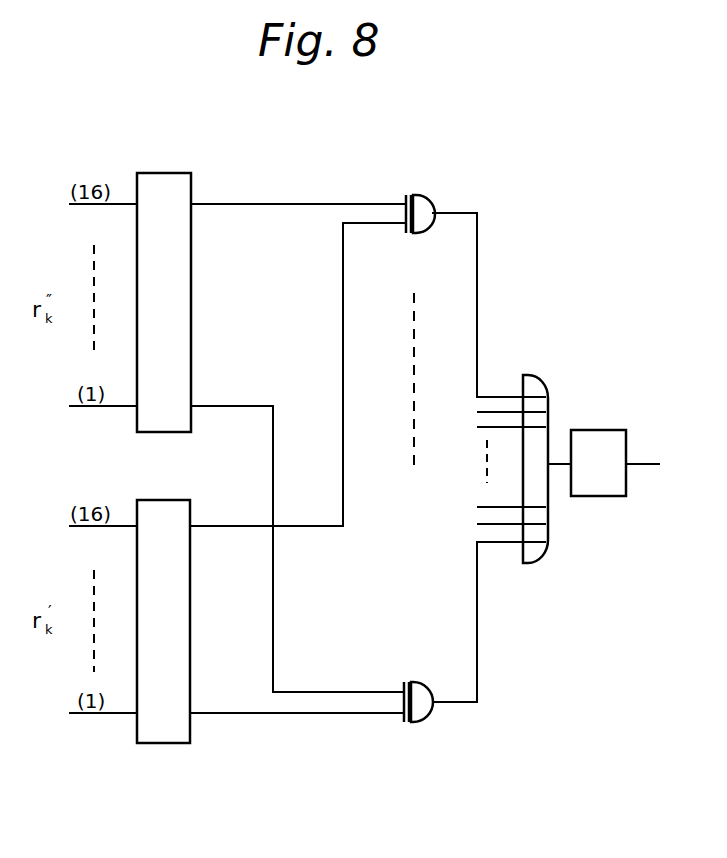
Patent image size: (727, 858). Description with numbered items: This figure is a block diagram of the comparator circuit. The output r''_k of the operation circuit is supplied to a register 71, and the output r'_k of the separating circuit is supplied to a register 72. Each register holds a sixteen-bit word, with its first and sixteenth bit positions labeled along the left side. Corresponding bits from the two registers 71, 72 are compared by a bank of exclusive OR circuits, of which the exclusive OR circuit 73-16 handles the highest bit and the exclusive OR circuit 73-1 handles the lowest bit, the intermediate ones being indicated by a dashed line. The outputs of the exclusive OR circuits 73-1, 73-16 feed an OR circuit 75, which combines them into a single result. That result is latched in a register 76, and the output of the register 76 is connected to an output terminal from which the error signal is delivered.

The register 71 is at (170, 172).
The register 72 is at (170, 499).
The exclusive OR circuit 73-16 is at (428, 196).
The exclusive OR circuit 73-1 is at (423, 720).
The OR circuit 75 is at (536, 565).
The register 76 is at (606, 497).